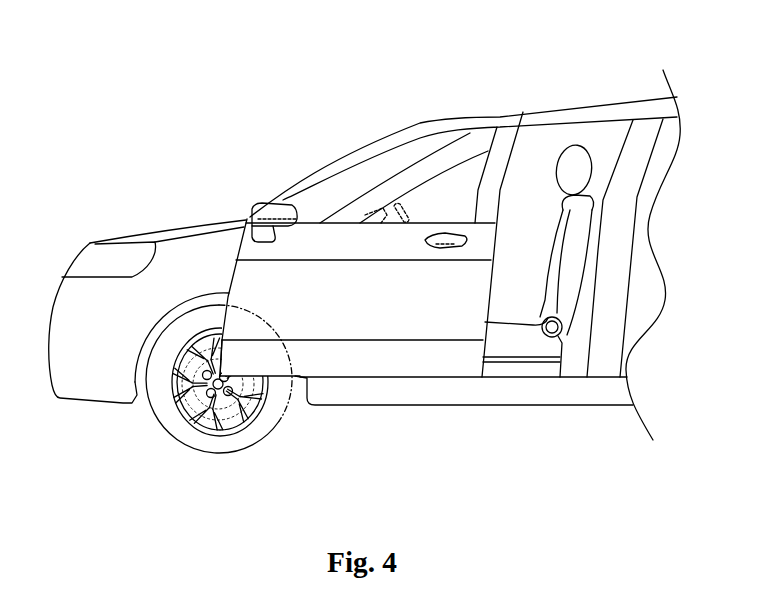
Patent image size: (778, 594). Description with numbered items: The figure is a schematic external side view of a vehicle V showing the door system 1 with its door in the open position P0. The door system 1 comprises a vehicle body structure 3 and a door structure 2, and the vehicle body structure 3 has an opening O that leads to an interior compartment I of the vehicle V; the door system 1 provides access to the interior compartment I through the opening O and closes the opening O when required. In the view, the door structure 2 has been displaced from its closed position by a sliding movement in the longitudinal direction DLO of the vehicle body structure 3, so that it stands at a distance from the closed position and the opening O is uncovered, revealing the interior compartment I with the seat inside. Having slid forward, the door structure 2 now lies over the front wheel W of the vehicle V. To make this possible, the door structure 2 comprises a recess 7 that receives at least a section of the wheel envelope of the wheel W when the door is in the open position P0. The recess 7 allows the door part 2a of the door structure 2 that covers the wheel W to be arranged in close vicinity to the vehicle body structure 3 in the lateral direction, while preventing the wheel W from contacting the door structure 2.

The door system 1 is at (392, 64).
The open position P0 is at (285, 107).
The vehicle body structure 3 is at (163, 224).
The vehicle V is at (590, 137).
The opening O is at (532, 166).
The door structure 2 is at (437, 307).
The door part 2a is at (257, 363).
The recess 7 is at (278, 383).
The interior compartment I is at (540, 352).
The wheel W is at (221, 453).
The longitudinal direction DLO is at (507, 483).